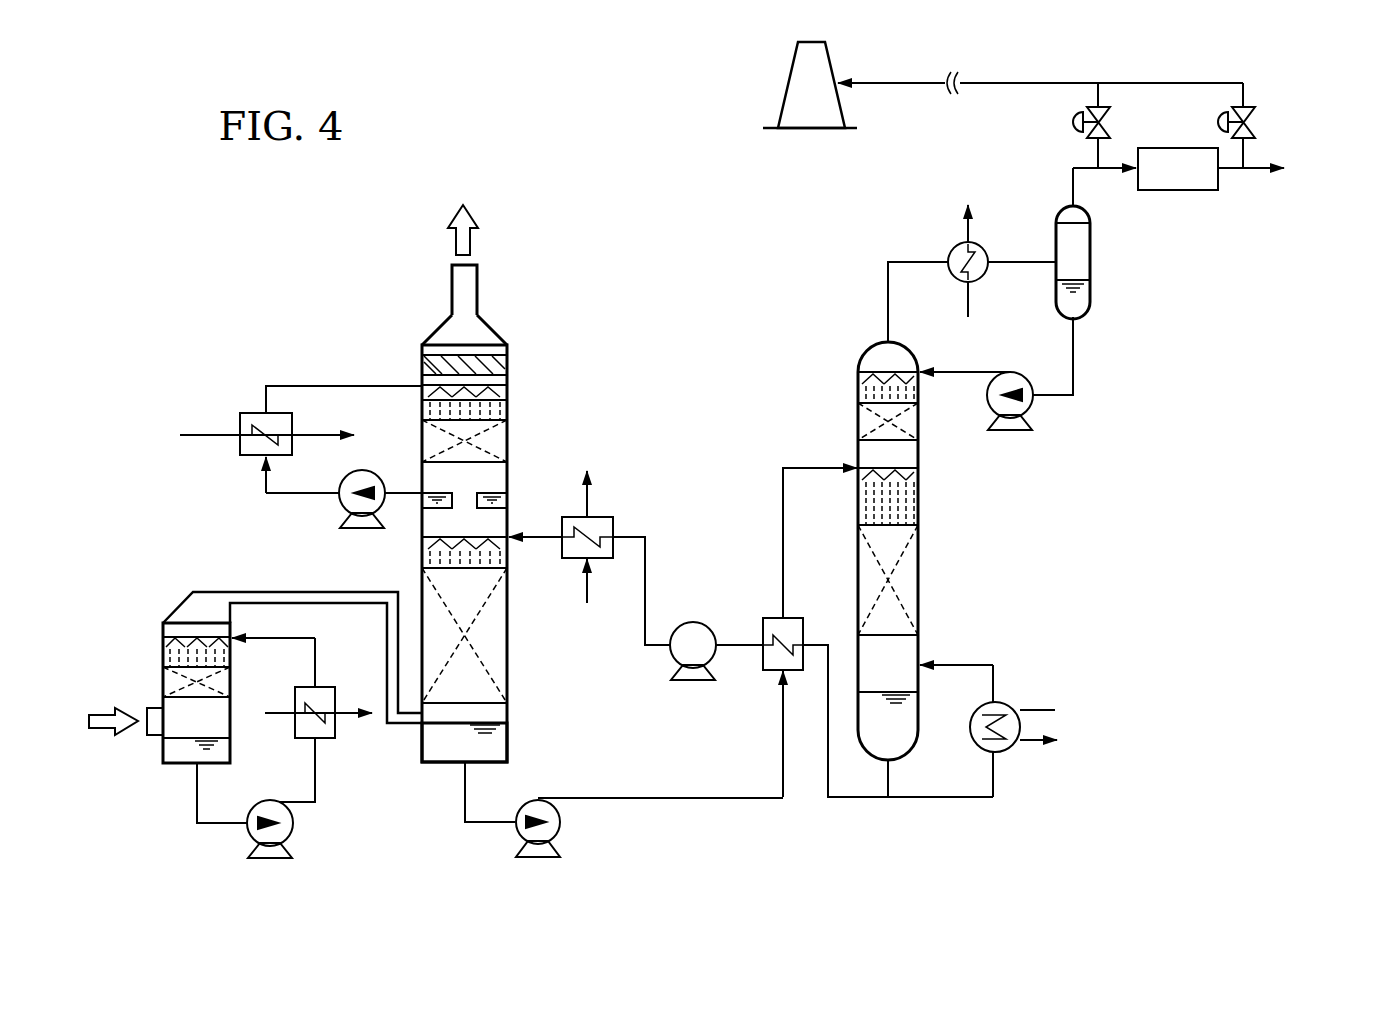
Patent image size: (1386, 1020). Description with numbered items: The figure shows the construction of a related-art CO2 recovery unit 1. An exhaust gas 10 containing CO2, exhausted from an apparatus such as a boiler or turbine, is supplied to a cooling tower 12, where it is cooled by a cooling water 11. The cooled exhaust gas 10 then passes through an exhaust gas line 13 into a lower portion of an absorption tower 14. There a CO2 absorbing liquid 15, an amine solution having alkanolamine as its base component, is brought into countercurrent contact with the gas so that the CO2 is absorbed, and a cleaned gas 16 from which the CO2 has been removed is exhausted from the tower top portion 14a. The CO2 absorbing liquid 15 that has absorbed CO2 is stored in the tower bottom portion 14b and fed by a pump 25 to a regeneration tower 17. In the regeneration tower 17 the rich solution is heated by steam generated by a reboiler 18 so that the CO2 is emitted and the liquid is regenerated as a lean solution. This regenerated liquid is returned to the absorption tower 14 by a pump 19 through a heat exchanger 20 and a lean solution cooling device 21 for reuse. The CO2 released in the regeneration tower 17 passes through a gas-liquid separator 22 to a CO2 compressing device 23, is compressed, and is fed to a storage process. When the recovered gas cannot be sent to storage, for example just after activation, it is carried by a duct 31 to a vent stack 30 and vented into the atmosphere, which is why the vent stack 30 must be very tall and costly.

The CO2 recovery unit 1 is at (732, 450).
The exhaust gas 10 is at (103, 712).
The cooling water 11 is at (232, 650).
The cooling tower 12 is at (172, 598).
The exhaust gas line 13 is at (297, 592).
The absorption tower 14 is at (486, 494).
The tower top portion 14a is at (480, 288).
The tower bottom portion 14b is at (497, 740).
The CO2 absorbing liquid 15 is at (500, 405).
The cleaned gas 16 is at (477, 240).
The regeneration tower 17 is at (868, 342).
The reboiler 18 is at (1005, 698).
The pump 19 is at (695, 621).
The heat exchanger 20 is at (790, 615).
The lean solution cooling device 21 is at (613, 528).
The gas-liquid separator 22 is at (1090, 270).
The CO2 compressing device 23 is at (1180, 193).
The pump 25 is at (560, 820).
The vent stack 30 is at (789, 90).
The duct 31 is at (910, 88).